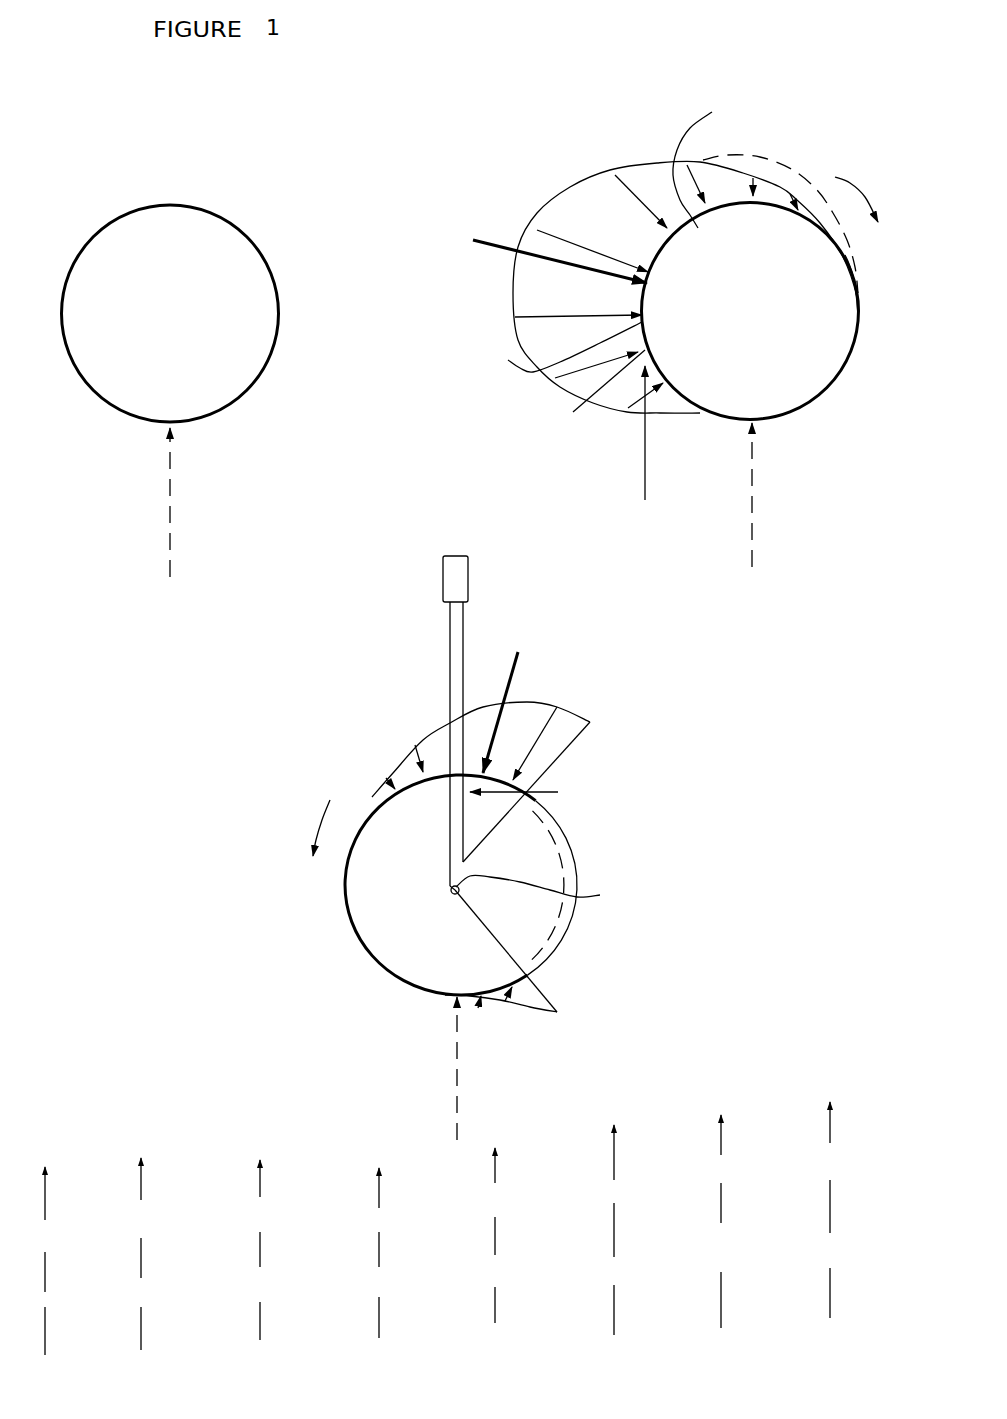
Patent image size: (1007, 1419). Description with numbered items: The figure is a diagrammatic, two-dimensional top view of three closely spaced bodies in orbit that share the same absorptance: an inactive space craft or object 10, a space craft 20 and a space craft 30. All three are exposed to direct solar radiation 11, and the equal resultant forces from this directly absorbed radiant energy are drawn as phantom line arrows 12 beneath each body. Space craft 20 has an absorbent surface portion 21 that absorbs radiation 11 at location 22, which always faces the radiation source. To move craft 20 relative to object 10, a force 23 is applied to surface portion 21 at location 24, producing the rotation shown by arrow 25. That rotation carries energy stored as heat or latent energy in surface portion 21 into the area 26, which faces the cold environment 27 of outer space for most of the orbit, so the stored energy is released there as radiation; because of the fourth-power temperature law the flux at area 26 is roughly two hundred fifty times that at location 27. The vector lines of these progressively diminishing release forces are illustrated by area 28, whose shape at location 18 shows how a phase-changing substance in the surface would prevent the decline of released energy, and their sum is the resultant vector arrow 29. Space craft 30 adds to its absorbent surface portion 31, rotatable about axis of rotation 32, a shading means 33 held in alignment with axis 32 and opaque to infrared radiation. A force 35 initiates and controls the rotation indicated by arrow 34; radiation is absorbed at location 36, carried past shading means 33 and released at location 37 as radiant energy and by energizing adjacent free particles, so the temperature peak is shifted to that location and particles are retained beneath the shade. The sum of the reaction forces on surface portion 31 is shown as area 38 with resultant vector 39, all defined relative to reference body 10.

The inactive space craft or object 10 is at (170, 281).
The solar radiation 11 is at (379, 1250).
The resultant force of directly absorbed radiation 12 is at (168, 478).
The location on area 28 18 is at (780, 170).
The space craft 20 is at (698, 160).
The absorbent surface portion 21 is at (810, 398).
The absorbing location 22 is at (748, 430).
The force 23 is at (643, 482).
The location of applied force 24 is at (595, 389).
The rotation arrow 25 is at (860, 198).
The energy release area 26 is at (867, 307).
The environment of outer space 27 is at (557, 349).
The area of reaction force vectors 28 is at (600, 177).
The resultant vector arrow 29 is at (492, 232).
The space craft 30 is at (455, 640).
The absorbent surface portion 31 is at (350, 927).
The axis of rotation 32 is at (540, 867).
The shading means 33 is at (565, 943).
The rotation arrow 34 is at (312, 842).
The force 35 is at (556, 796).
The absorbing location 36 is at (443, 1003).
The release location 37 is at (497, 780).
The area of reaction forces 38 is at (420, 737).
The resultant vector 39 is at (518, 672).